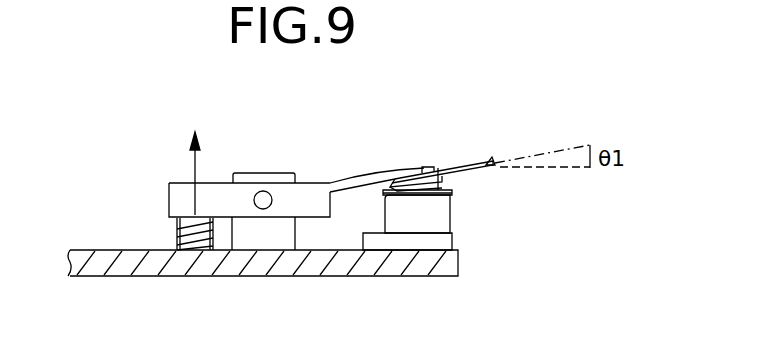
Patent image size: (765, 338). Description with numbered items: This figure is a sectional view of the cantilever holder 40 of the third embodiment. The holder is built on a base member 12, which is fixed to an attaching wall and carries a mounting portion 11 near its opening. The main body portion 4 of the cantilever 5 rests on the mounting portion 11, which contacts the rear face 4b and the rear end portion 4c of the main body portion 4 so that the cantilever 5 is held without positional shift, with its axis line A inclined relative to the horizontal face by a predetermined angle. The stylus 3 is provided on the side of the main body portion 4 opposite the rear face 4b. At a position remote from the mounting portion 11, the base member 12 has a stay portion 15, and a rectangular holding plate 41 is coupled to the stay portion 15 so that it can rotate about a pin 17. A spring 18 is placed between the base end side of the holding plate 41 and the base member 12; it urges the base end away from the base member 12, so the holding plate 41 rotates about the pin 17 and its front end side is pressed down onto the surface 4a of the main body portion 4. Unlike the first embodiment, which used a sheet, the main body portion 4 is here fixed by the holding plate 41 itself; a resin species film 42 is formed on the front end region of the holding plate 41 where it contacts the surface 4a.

The stylus 3 is at (492, 157).
The main body portion 4 is at (442, 168).
The surface of the main body portion 4a is at (440, 168).
The rear face of the main body portion 4b is at (451, 197).
The rear end portion of the main body portion 4c is at (400, 191).
The cantilever 5 is at (470, 164).
The mounting portion 11 is at (383, 198).
The base member 12 is at (423, 277).
The stay portion 15 is at (290, 252).
The pin 17 is at (263, 209).
The spring 18 is at (190, 277).
The cantilever holder 40 is at (387, 179).
The holding plate 41 is at (314, 183).
The resin species film 42 is at (426, 170).
The axis line of the cantilever A is at (590, 145).